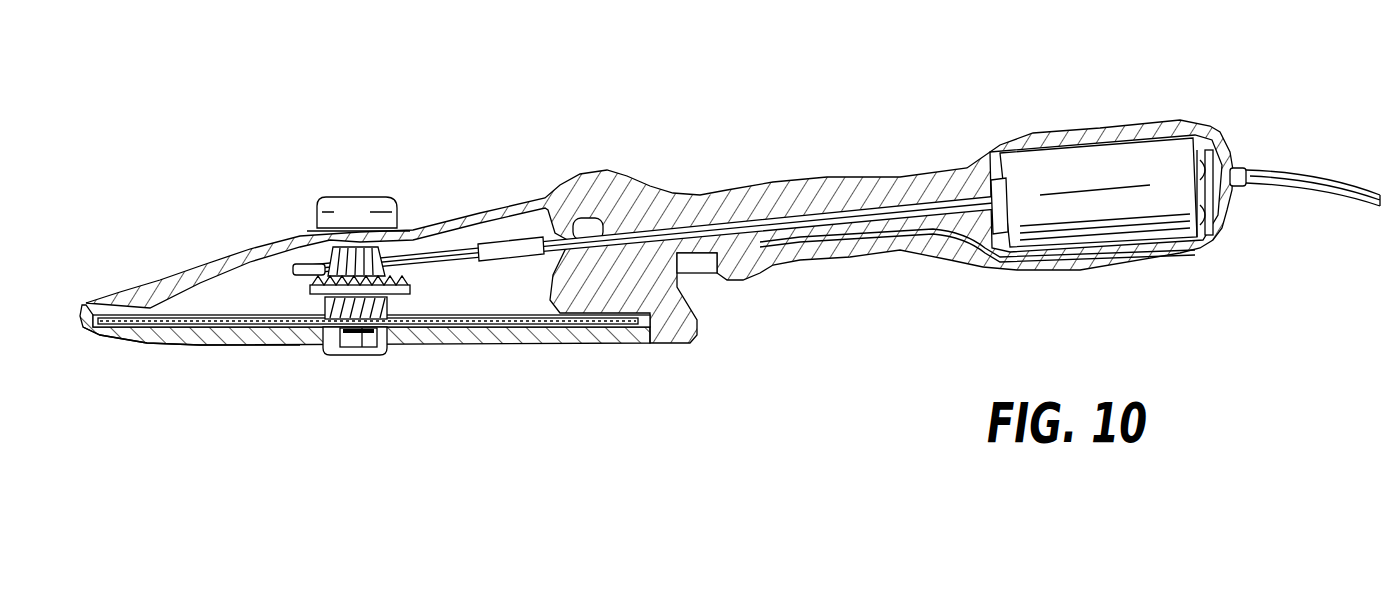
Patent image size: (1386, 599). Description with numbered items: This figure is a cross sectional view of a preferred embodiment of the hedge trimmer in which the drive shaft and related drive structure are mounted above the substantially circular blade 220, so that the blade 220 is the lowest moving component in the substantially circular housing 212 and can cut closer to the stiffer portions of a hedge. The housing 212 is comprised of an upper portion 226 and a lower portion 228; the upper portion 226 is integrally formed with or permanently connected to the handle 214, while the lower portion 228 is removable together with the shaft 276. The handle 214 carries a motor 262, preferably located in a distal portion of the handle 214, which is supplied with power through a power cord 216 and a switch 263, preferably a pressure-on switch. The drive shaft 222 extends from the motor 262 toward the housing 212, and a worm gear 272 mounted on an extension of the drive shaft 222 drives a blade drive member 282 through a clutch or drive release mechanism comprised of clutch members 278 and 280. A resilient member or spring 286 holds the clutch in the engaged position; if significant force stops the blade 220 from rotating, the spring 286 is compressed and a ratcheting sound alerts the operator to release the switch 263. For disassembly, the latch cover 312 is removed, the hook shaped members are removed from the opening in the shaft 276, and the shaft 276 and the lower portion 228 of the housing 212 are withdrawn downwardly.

The substantially circular housing 212 is at (190, 262).
The handle 214 is at (815, 178).
The power cord 216 is at (1300, 172).
The substantially circular blade 220 is at (530, 318).
The drive shaft 222 is at (607, 215).
The upper portion 226 is at (267, 237).
The lower portion 228 is at (150, 346).
The motor 262 is at (1095, 165).
The switch 263 is at (702, 278).
The worm gear 272 is at (370, 250).
The shaft 276 is at (385, 337).
The clutch member 278 is at (422, 282).
The clutch member 280 is at (303, 293).
The blade drive member 282 is at (447, 312).
The resilient member or spring 286 is at (323, 320).
The latch cover 312 is at (360, 196).